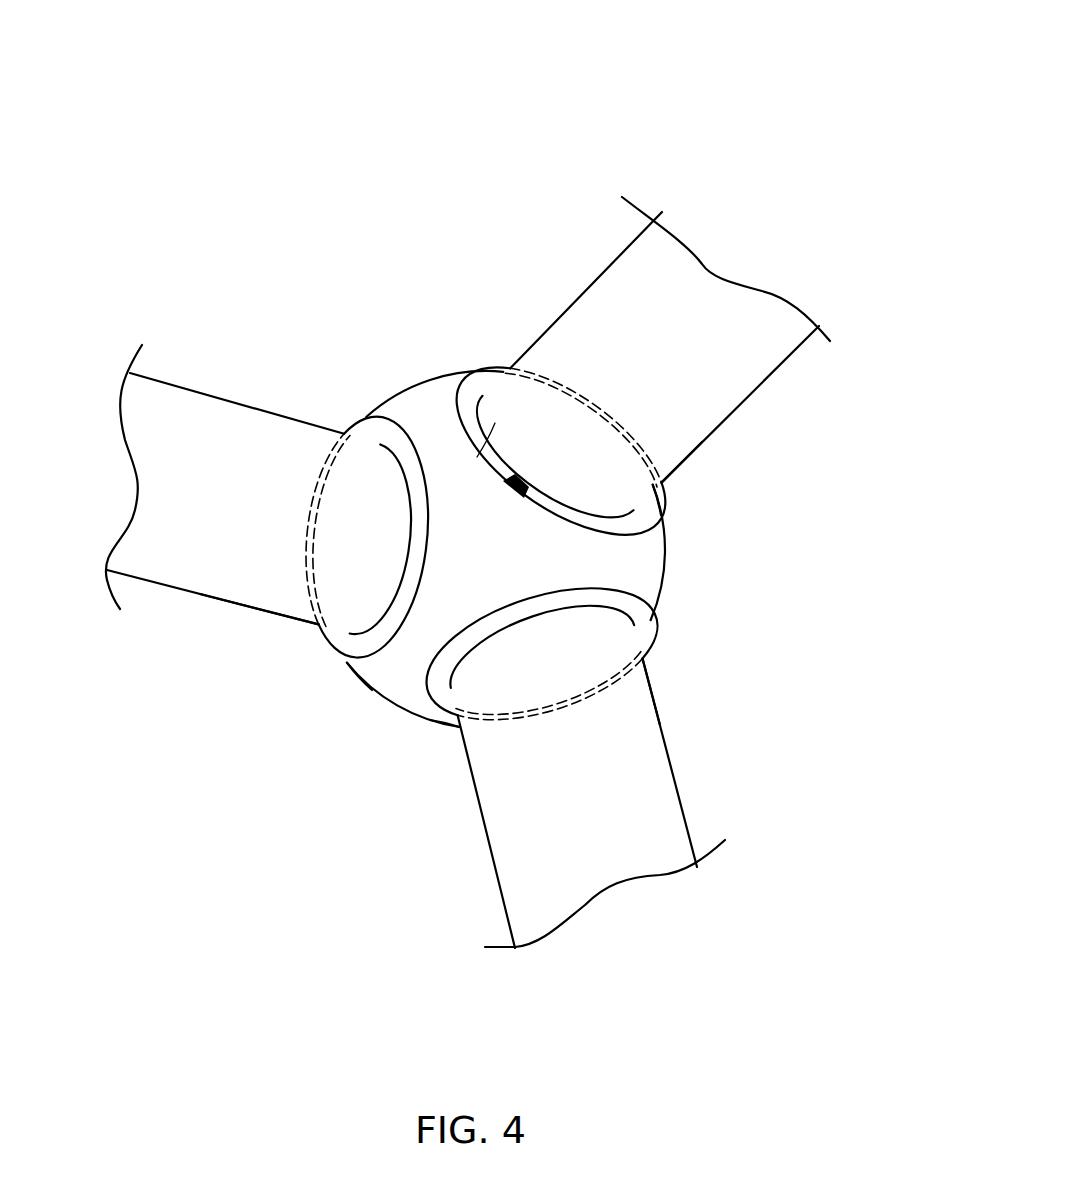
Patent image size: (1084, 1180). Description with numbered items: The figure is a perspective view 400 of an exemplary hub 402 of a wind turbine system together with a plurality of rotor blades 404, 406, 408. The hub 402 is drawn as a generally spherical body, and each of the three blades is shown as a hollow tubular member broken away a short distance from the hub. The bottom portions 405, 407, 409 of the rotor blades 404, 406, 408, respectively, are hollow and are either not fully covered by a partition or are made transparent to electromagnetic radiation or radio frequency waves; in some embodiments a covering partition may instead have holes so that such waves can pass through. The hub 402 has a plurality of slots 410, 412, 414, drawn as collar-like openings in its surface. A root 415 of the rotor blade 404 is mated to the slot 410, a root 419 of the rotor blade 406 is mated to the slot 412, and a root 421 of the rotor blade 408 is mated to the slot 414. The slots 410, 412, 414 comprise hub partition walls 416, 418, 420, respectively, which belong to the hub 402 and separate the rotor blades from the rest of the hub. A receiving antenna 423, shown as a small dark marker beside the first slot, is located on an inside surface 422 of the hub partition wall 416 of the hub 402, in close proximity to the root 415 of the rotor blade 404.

The perspective view 400 is at (806, 84).
The hub 402 is at (393, 400).
The rotor blade 404 is at (741, 293).
The bottom portion 405 is at (587, 461).
The rotor blade 406 is at (133, 515).
The bottom portion 407 is at (387, 553).
The rotor blade 408 is at (632, 868).
The bottom portion 409 is at (567, 678).
The slot 410 is at (468, 394).
The slot 412 is at (366, 427).
The slot 414 is at (608, 599).
The root 415 is at (668, 468).
The hub partition wall 416 is at (648, 528).
The hub partition wall 418 is at (363, 658).
The root 419 is at (299, 613).
The hub partition wall 420 is at (428, 700).
The root 421 is at (637, 668).
The inside surface 422 is at (495, 423).
The receiving antenna 423 is at (531, 494).